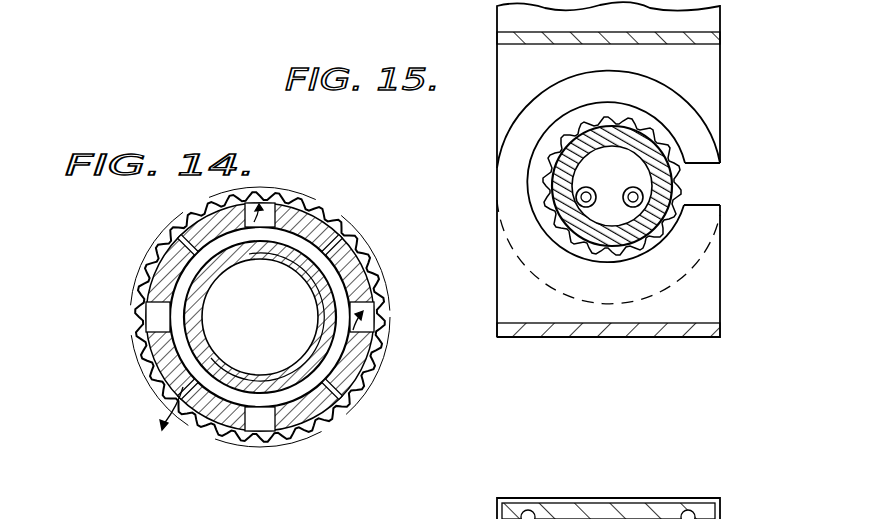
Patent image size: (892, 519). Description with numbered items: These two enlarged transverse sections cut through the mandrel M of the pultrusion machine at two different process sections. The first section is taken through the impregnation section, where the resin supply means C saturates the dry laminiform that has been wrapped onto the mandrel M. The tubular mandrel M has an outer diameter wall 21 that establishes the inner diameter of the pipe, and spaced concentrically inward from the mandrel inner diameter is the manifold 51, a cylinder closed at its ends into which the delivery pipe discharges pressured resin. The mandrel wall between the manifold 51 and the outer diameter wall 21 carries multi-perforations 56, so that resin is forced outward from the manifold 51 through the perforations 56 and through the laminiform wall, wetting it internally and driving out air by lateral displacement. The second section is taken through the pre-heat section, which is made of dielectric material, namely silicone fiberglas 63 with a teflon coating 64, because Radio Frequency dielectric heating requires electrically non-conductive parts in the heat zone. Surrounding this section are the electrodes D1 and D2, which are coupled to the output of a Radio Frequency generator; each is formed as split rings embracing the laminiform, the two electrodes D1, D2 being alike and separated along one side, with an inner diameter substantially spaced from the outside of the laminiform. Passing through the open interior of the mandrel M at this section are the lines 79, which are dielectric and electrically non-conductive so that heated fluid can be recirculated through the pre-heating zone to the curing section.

In FIG. 14, the resin supply means C is at (152, 227).
In FIG. 14, the mandrel M is at (158, 371).
In FIG. 14, the multi-perforations 56 is at (335, 241).
In FIG. 14, the manifold 51 is at (246, 247).
In FIG. 14, the outer diameter wall 21 is at (368, 262).
In FIG. 15, the electrode D1 is at (727, 99).
In FIG. 15, the electrode D2 is at (727, 301).
In FIG. 15, the silicone fiberglas 63 is at (670, 190).
In FIG. 15, the teflon coating 64 is at (662, 218).
In FIG. 15, the lines 79 is at (629, 188).